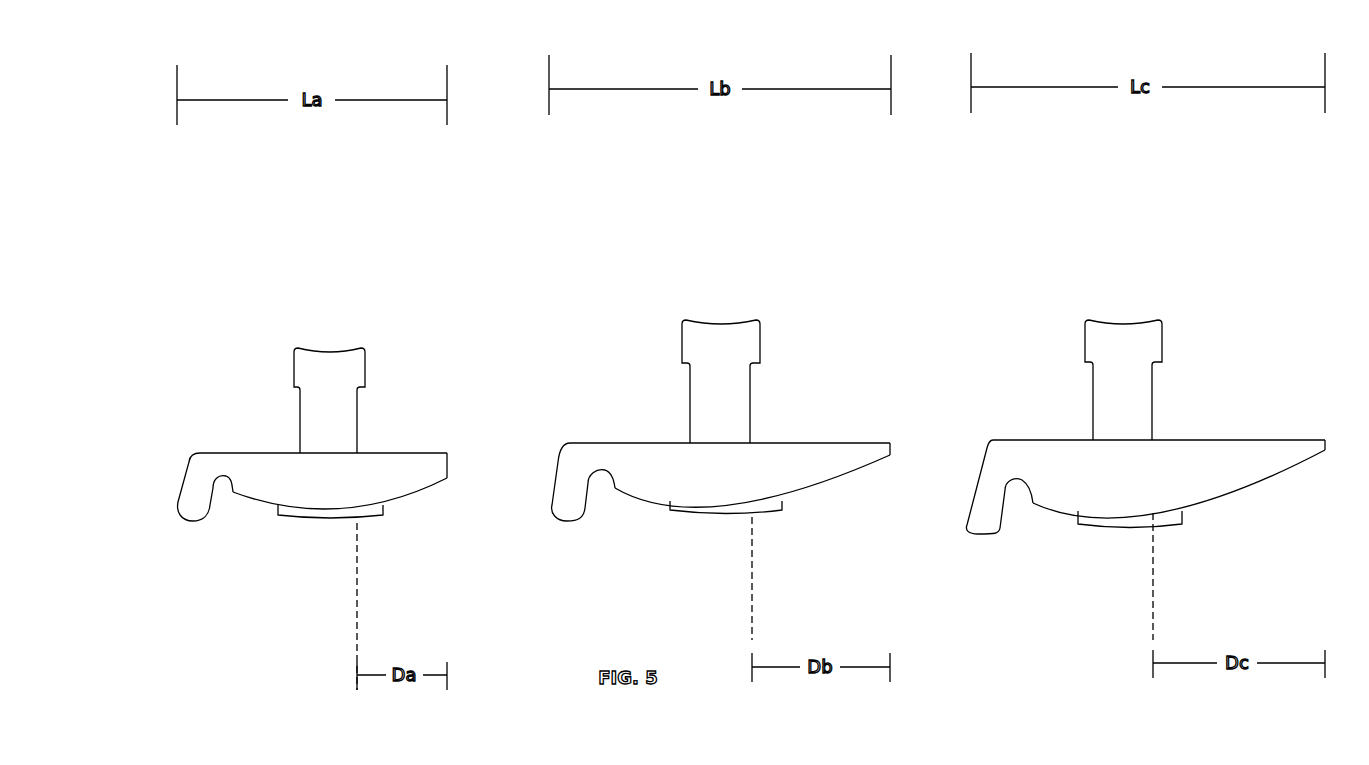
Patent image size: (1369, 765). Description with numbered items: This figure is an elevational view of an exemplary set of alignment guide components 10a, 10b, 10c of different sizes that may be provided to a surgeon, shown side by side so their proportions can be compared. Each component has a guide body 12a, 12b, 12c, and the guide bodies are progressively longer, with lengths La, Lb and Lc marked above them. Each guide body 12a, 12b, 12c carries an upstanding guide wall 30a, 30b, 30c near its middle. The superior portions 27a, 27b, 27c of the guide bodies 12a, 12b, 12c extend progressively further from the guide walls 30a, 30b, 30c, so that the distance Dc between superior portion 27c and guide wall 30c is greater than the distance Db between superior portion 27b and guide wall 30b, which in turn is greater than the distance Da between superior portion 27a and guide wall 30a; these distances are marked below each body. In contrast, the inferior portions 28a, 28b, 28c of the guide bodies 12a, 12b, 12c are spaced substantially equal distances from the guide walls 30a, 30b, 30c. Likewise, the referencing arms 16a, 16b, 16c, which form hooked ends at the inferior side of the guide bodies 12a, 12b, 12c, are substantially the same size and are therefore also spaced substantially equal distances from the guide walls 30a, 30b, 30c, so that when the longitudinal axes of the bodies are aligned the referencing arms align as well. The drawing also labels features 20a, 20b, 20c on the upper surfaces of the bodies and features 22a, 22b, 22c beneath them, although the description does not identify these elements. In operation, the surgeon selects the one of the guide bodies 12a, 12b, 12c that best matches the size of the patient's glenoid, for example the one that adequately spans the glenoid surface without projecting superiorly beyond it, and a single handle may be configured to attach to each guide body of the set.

The alignment guide component 10a is at (358, 302).
The alignment guide component 10b is at (730, 290).
The alignment guide component 10c is at (1152, 288).
The guide body 12a is at (390, 483).
The guide body 12b is at (763, 475).
The guide body 12c is at (1198, 485).
The referencing arm 16a is at (190, 502).
The referencing arm 16b is at (565, 492).
The referencing arm 16c is at (987, 490).
The top surface 20a is at (200, 451).
The top surface 20b is at (573, 441).
The top surface 20c is at (995, 438).
The bottom plate 22a is at (293, 514).
The bottom plate 22b is at (673, 514).
The bottom plate 22c is at (1087, 524).
The superior portion 27a is at (434, 447).
The superior portion 27b is at (804, 440).
The superior portion 27c is at (1226, 437).
The inferior portion 28a is at (226, 514).
The inferior portion 28b is at (598, 505).
The inferior portion 28c is at (1019, 502).
The guide wall 30a is at (357, 415).
The guide wall 30b is at (750, 400).
The guide wall 30c is at (1152, 402).